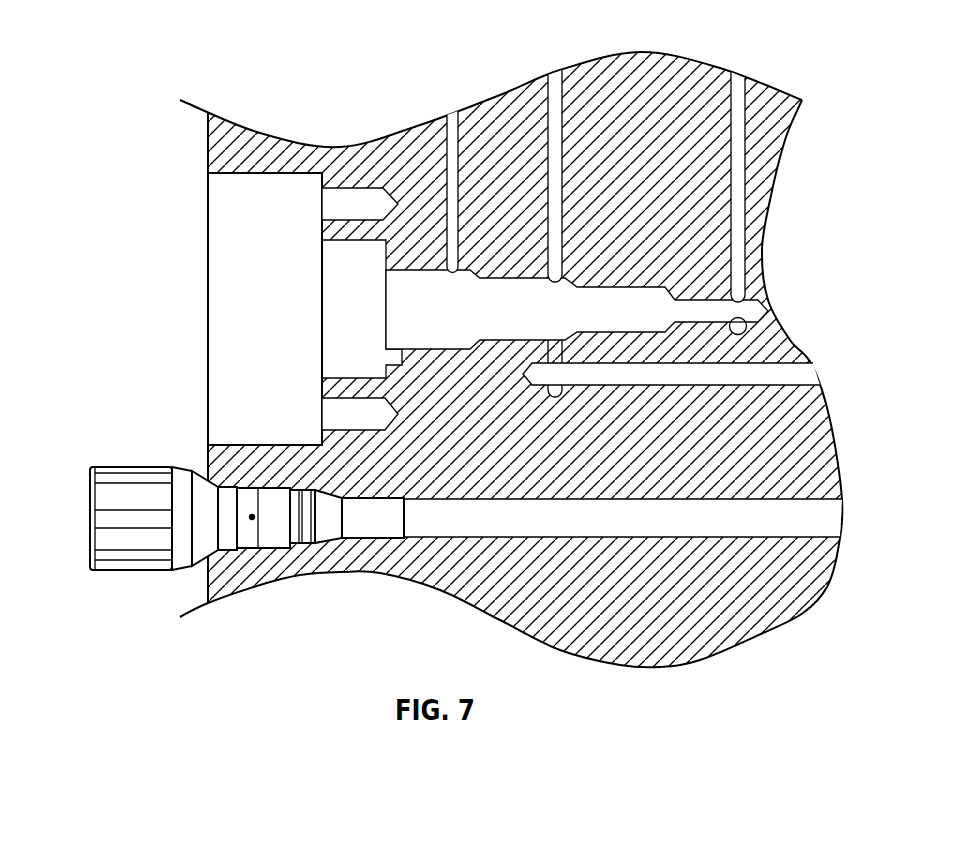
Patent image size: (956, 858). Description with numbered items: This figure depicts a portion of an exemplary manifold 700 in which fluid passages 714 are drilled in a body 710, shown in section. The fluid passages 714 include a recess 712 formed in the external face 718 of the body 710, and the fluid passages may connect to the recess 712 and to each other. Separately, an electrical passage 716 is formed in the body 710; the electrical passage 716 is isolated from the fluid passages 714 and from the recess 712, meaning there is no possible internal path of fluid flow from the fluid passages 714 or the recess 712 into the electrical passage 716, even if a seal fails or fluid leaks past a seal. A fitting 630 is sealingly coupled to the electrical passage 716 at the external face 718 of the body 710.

The manifold 700 is at (464, 344).
The body 710 is at (675, 160).
The recess 712 is at (228, 258).
The fluid passages 714 is at (555, 87).
The electrical passage 716 is at (580, 515).
The external face 718 is at (205, 582).
The fitting 630 is at (102, 518).